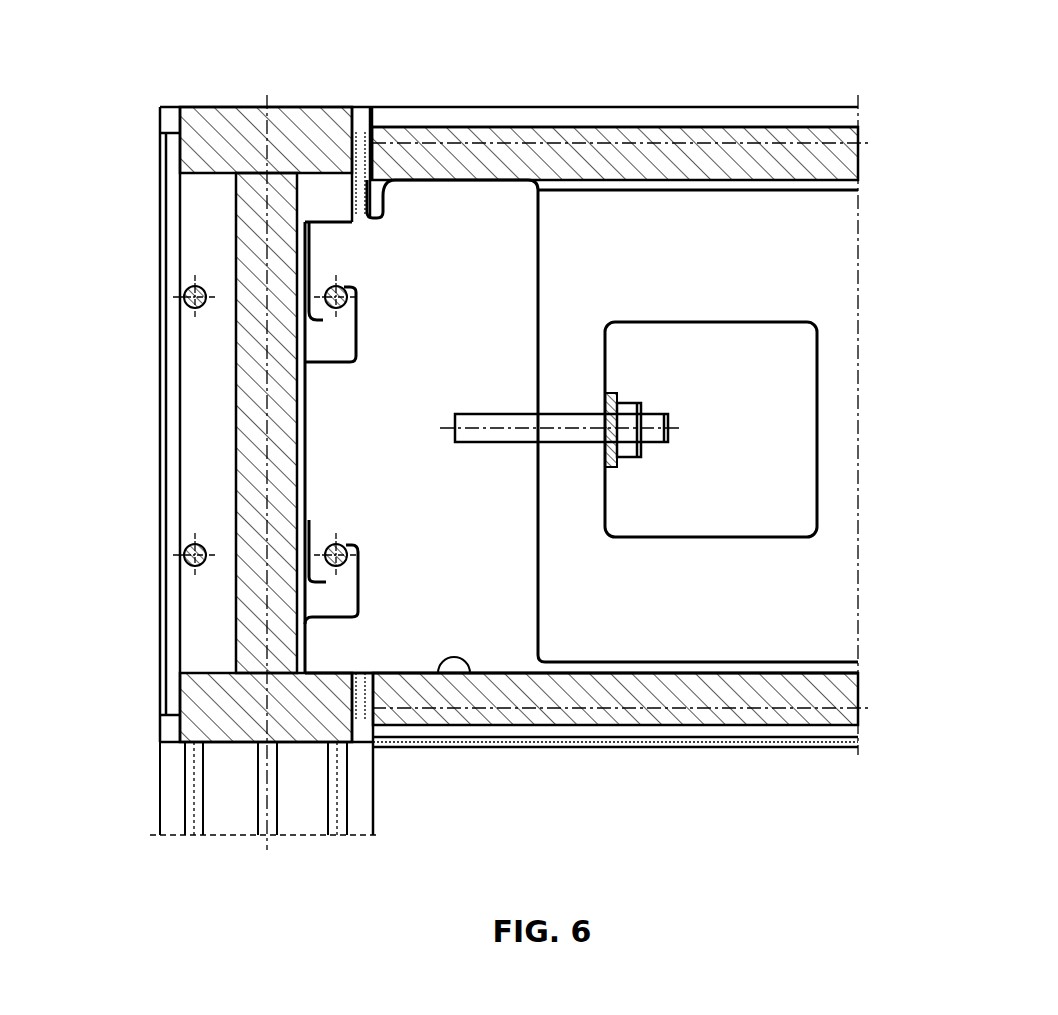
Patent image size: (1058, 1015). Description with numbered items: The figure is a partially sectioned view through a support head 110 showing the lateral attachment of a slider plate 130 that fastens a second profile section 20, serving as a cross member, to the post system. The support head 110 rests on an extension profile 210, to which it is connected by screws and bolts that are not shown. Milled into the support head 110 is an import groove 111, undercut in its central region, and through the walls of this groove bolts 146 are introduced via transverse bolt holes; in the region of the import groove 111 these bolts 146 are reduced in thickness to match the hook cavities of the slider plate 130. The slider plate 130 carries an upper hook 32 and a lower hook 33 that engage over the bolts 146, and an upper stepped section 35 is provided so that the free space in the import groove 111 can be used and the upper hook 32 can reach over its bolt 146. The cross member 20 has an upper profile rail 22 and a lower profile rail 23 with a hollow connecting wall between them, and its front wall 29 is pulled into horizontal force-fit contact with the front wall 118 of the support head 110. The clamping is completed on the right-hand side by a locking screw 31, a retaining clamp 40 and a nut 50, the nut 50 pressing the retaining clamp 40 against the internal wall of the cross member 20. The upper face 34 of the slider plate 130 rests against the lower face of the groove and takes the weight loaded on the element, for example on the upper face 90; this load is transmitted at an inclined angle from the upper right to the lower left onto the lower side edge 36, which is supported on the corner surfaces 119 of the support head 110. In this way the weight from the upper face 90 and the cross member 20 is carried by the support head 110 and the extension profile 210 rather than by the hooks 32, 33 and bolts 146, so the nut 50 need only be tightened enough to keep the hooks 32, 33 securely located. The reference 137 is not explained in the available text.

The second profile section 20 is at (735, 627).
The upper profile rail 22 is at (739, 157).
The lower profile rail 23 is at (648, 723).
The front wall of the cross member 29 is at (386, 107).
The locking screw 31 is at (670, 432).
The upper hook 32 is at (323, 288).
The lower hook 33 is at (355, 563).
The upper face of the slider plate 34 is at (487, 182).
The upper stepped section 35 is at (360, 222).
The lower side edge 36 is at (460, 660).
The retaining clamp 40 is at (612, 392).
The nut 50 is at (640, 404).
The upper face 90 is at (637, 107).
The support head 110 is at (216, 718).
The import groove 111 is at (324, 198).
The front wall 118 is at (373, 755).
The corner surface 119 is at (218, 668).
The slider plate 130 is at (510, 602).
The post 137 is at (323, 597).
The bolt 146 is at (327, 545).
The extension profile 210 is at (360, 824).